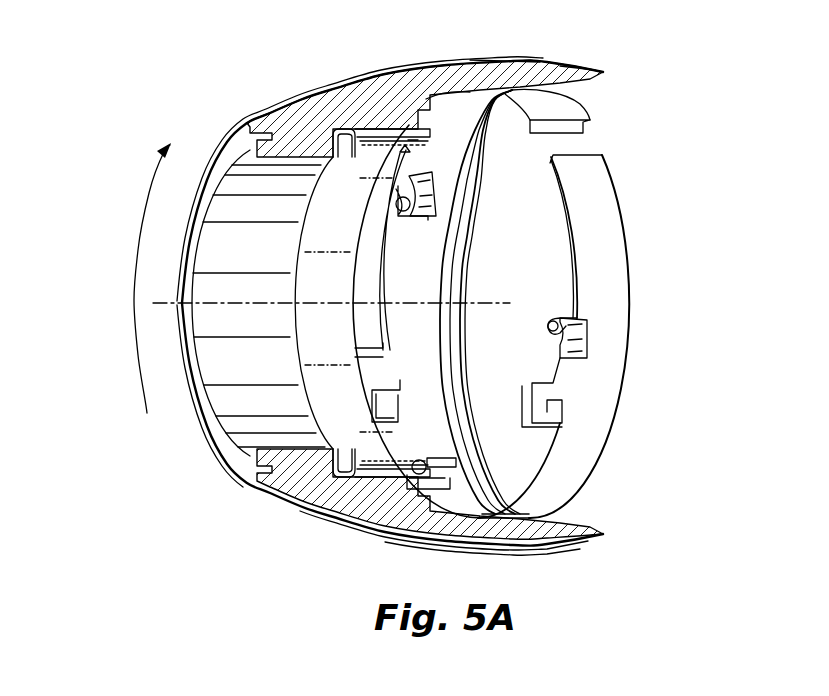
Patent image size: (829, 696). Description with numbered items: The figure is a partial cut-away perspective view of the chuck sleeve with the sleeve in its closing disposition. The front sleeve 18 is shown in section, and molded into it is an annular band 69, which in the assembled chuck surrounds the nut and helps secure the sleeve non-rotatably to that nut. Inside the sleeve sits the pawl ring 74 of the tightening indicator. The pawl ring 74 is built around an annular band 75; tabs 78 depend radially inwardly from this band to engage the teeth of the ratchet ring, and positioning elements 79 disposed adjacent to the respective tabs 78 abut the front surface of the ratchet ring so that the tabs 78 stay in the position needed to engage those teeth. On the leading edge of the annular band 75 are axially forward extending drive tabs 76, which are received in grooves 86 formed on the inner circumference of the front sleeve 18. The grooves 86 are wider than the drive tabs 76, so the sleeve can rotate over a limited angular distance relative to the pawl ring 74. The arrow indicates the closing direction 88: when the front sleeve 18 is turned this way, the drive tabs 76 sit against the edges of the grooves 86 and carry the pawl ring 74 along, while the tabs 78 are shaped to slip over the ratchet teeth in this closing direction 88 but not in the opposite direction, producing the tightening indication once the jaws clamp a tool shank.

The front sleeve 18 is at (322, 118).
The annular band 69 is at (368, 466).
The pawl ring 74 is at (636, 256).
The annular band 75 is at (604, 221).
The drive tabs 76 is at (413, 144).
The tabs 78 is at (423, 200).
The positioning elements 79 is at (410, 248).
The grooves 86 is at (426, 98).
The closing direction 88 is at (148, 192).